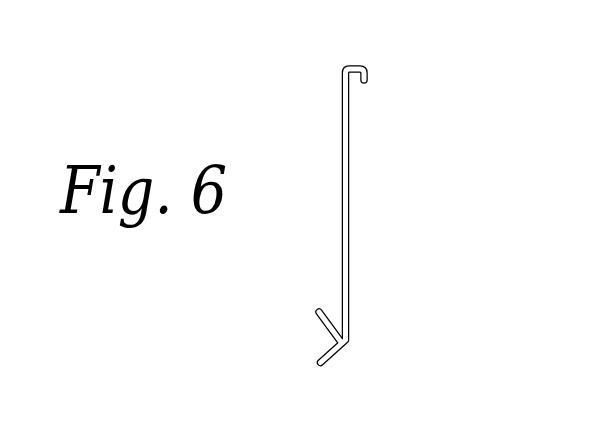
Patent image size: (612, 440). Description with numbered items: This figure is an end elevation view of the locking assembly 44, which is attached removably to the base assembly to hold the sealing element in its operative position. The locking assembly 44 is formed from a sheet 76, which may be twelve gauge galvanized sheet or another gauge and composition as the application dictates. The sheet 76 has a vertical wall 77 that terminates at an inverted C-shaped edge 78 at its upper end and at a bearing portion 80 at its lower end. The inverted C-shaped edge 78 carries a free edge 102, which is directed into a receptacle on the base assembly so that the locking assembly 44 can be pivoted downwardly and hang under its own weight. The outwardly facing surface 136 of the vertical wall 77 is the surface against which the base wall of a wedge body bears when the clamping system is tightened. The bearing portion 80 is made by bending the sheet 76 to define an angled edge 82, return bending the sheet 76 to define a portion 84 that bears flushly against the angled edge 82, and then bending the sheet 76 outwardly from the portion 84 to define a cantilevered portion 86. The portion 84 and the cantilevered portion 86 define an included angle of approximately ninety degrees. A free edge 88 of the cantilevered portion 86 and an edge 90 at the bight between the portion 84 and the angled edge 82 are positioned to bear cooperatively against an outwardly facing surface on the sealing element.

The sheet 76 is at (350, 153).
The inverted C-shaped edge 78 is at (355, 66).
The free edge 102 is at (365, 82).
The outwardly facing surface 136 is at (350, 193).
The locking assembly 44 is at (350, 220).
The vertical wall 77 is at (350, 270).
The free edge 88 is at (317, 313).
The cantilevered portion 86 is at (318, 325).
The portion 84 is at (320, 358).
The edge 90 is at (325, 366).
The angled edge 82 is at (325, 366).
The bearing portion 80 is at (350, 355).